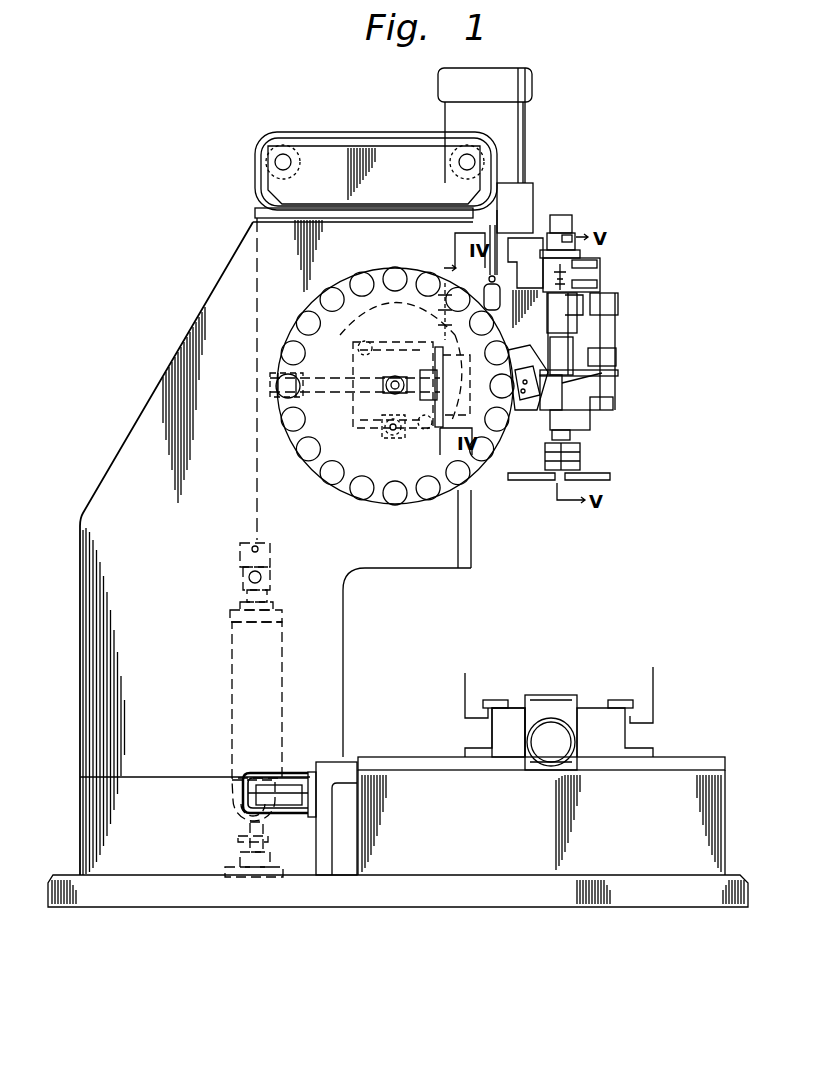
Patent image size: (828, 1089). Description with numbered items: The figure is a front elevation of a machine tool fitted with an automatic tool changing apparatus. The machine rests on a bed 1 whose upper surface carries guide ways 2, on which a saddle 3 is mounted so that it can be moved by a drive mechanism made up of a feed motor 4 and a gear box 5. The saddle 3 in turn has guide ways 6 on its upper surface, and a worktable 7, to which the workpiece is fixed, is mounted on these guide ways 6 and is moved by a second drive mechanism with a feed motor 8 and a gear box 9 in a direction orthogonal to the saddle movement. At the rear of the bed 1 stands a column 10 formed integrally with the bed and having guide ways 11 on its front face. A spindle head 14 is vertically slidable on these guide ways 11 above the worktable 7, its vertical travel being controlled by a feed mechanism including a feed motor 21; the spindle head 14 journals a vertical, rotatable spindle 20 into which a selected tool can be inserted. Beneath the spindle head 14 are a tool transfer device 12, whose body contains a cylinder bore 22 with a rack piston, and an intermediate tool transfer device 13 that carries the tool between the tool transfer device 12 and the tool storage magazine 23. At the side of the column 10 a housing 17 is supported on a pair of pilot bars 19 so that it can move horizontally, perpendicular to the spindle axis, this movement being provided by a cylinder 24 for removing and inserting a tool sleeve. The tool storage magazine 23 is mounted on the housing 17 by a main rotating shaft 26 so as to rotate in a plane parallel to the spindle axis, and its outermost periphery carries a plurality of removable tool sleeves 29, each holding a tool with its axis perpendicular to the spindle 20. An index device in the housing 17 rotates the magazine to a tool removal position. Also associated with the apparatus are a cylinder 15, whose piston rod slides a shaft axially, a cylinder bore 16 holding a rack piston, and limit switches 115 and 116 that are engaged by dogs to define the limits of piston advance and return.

The bed 1 is at (492, 866).
The guide ways 2 is at (709, 756).
The saddle 3 is at (612, 742).
The feed motor 4 is at (296, 773).
The gear box 5 is at (323, 815).
The guide ways 6 is at (492, 699).
The worktable 7 is at (546, 696).
The feed motor 8 is at (550, 753).
The gear box 9 is at (535, 712).
The column 10 is at (90, 677).
The guide ways 11 is at (478, 488).
The tool transfer device 12 is at (553, 482).
The intermediate tool transfer device 13 is at (520, 430).
The spindle head 14 is at (500, 258).
The cylinder 15 is at (282, 370).
The cylinder bore 16 is at (413, 348).
The housing 17 is at (353, 366).
The pilot bars 19 is at (357, 348).
The spindle 20 is at (580, 462).
The feed motor 21 is at (512, 92).
The cylinder bore 22 is at (600, 373).
The tool storage magazine 23 is at (380, 494).
The cylinder 24 is at (388, 438).
The main rotating shaft 26 is at (372, 394).
The tool sleeves 29 is at (458, 496).
The limit switch 115 is at (440, 268).
The limit switch 116 is at (432, 336).